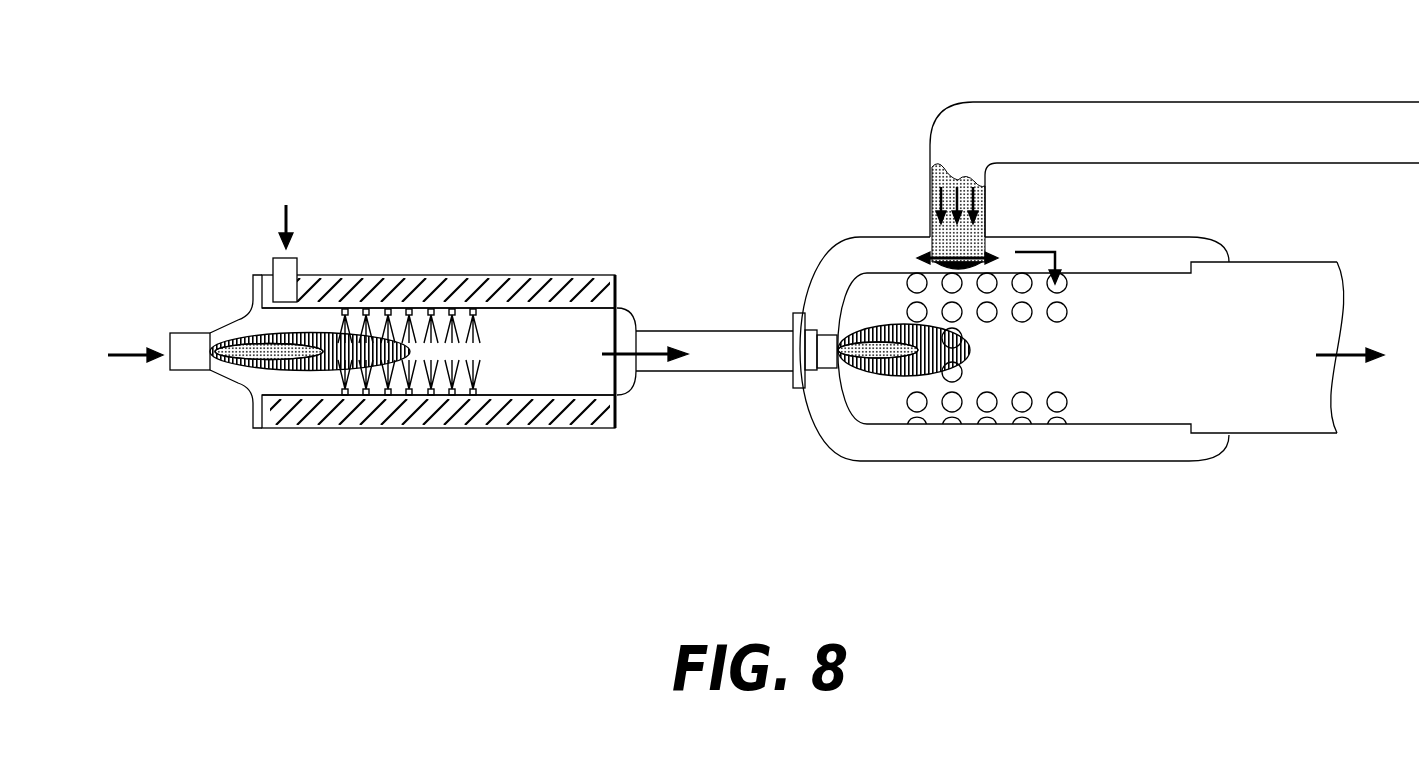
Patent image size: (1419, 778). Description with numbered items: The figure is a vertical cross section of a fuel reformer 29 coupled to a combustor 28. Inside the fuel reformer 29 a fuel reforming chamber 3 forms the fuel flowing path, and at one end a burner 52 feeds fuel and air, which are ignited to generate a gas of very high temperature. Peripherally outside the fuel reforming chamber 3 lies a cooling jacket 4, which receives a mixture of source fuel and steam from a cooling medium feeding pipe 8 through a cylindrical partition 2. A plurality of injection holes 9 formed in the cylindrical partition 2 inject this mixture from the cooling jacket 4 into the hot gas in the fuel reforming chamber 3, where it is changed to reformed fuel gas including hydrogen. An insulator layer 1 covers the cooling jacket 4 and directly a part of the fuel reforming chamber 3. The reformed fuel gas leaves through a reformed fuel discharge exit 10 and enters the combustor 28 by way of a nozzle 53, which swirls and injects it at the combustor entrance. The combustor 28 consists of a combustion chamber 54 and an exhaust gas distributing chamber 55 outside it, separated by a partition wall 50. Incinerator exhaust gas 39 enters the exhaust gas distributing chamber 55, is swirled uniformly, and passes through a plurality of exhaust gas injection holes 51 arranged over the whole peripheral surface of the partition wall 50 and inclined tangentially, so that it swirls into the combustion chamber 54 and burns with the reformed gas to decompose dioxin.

The insulator layer 1 is at (546, 282).
The cylindrical partition 2 is at (343, 305).
The fuel reforming chamber 3 is at (510, 370).
The cooling jacket 4 is at (398, 304).
The cooling medium feeding pipe 8 is at (272, 272).
The injection holes 9 is at (452, 300).
The reformed fuel discharge exit 10 is at (655, 350).
The combustor 28 is at (1117, 462).
The fuel reformer 29 is at (522, 430).
The exhaust gas 39 is at (1055, 118).
The partition wall 50 is at (1118, 273).
The exhaust gas injection holes 51 is at (1057, 405).
The burner 52 is at (188, 340).
The nozzle 53 is at (825, 340).
The combustion chamber 54 is at (1007, 373).
The exhaust gas distributing chamber 55 is at (908, 448).